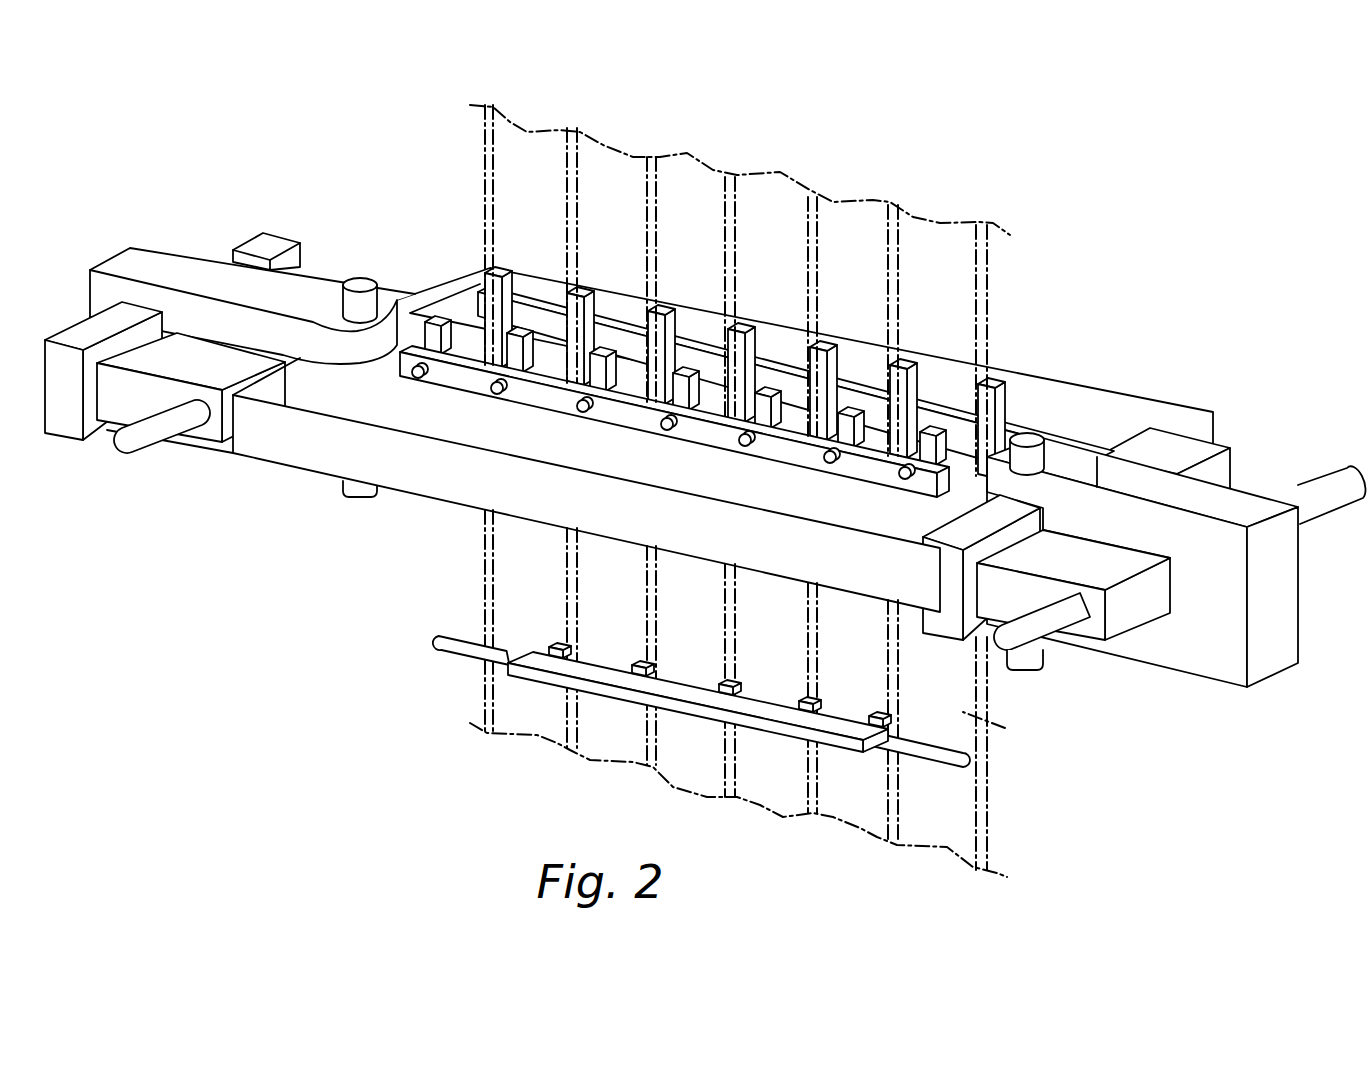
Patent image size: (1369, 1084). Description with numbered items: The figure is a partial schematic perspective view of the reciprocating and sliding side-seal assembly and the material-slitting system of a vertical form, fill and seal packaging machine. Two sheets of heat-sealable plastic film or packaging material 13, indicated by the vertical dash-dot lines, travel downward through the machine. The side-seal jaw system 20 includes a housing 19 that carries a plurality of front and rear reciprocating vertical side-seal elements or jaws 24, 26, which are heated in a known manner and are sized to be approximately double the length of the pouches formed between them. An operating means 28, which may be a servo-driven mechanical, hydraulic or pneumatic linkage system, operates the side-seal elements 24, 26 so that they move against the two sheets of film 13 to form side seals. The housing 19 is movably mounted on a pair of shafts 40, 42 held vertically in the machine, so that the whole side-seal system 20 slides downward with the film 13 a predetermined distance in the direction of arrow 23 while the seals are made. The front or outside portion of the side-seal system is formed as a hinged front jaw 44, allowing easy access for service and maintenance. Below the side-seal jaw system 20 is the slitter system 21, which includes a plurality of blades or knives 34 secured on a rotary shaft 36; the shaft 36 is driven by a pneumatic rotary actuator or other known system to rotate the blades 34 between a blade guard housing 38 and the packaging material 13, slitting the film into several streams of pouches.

The packaging material 13 is at (1005, 728).
The housing 19 is at (1140, 385).
The side-seal jaw system 20 is at (240, 593).
The slitter system 21 is at (662, 701).
The arrow 23 is at (1073, 658).
The front side-seal elements 24 is at (512, 350).
The rear side-seal elements 26 is at (993, 383).
The operating means 28 is at (166, 262).
The blades 34 is at (630, 660).
The rotary shaft 36 is at (447, 653).
The blade guard housing 38 is at (600, 690).
The shaft 40 is at (1064, 698).
The shaft 42 is at (160, 350).
The hinged front jaw 44 is at (413, 480).